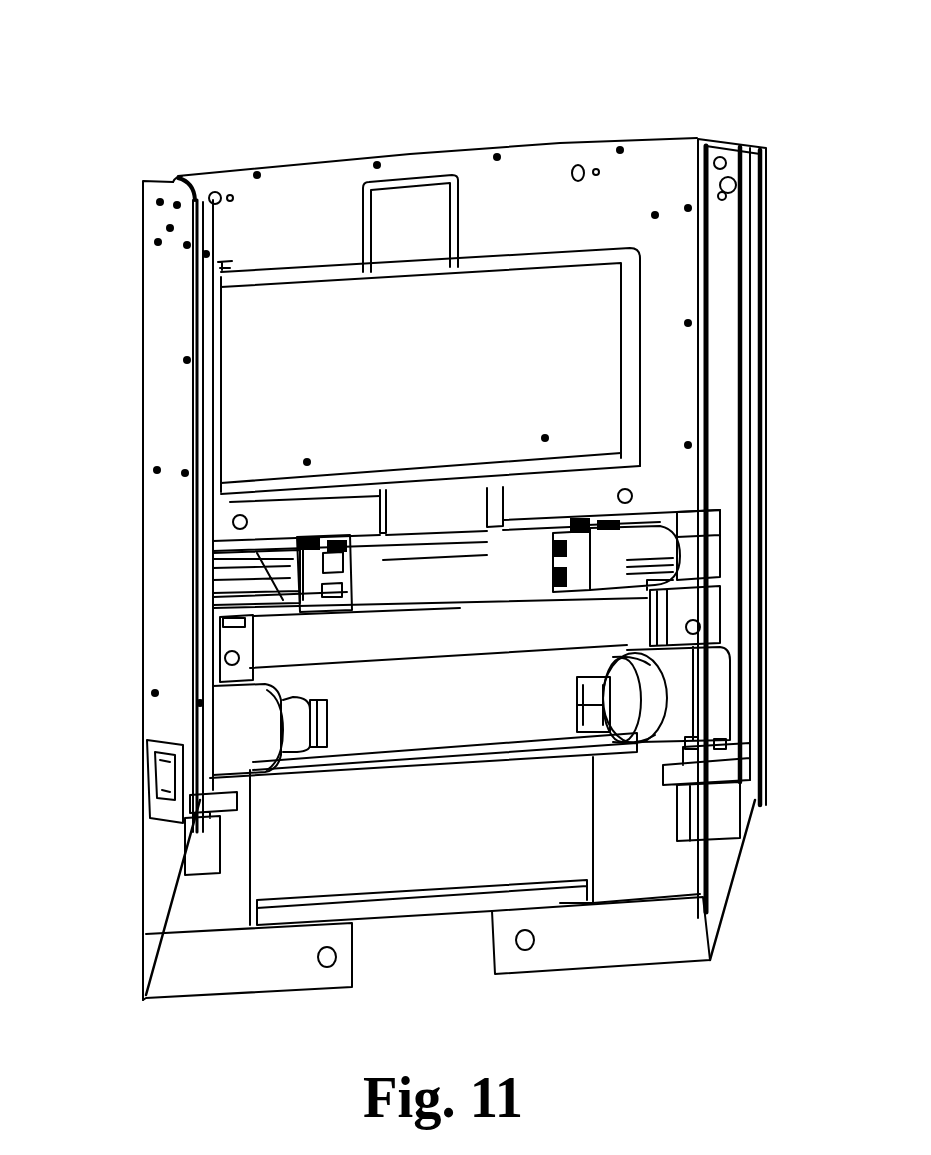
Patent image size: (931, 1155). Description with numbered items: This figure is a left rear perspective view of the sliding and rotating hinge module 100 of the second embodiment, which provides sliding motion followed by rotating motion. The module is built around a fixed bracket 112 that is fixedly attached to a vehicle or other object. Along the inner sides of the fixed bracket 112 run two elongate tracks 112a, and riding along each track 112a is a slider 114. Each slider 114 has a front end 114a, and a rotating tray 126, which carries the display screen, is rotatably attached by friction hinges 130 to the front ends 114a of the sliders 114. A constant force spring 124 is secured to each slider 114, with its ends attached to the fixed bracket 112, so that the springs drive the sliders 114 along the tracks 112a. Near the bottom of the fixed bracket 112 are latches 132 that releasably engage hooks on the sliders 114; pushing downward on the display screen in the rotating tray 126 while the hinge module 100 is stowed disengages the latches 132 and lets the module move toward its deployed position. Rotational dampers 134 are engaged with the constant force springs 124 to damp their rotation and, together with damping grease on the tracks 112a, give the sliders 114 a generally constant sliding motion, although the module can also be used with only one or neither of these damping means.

The sliding and rotating hinge module 100 is at (727, 62).
The fixed bracket 112 is at (618, 942).
The elongate track 112a is at (213, 323).
The slider 114 is at (213, 612).
The front end 114a is at (233, 570).
The constant force spring 124 is at (227, 713).
The rotating tray 126 is at (300, 180).
The friction hinge 130 is at (277, 557).
The latch 132 is at (195, 848).
The rotational damper 134 is at (245, 681).